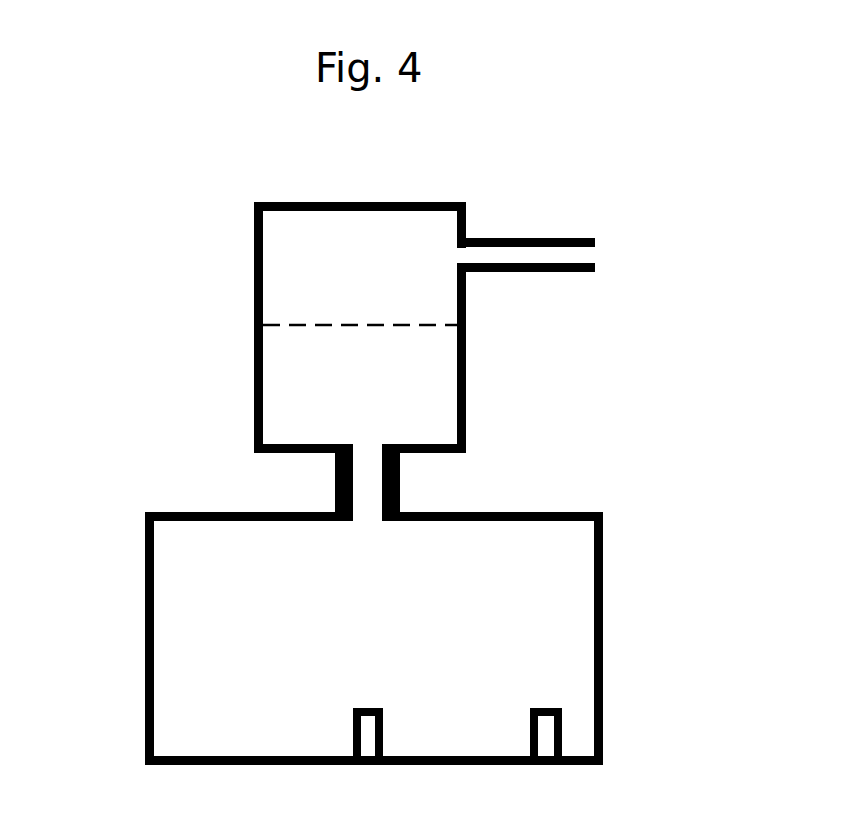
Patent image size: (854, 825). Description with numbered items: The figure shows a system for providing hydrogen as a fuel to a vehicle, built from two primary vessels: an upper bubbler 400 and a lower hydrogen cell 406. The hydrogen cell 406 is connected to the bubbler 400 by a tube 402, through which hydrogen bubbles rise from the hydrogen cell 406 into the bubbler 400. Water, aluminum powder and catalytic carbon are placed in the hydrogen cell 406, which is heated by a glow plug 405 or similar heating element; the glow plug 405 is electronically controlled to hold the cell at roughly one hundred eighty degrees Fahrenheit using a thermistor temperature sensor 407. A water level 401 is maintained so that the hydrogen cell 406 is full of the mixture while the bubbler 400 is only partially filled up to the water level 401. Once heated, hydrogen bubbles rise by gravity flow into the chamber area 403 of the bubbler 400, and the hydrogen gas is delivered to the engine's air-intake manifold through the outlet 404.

The bubbler 400 is at (254, 268).
The water level 401 is at (330, 326).
The tube 402 is at (365, 482).
The chamber area 403 is at (357, 263).
The outlet 404 is at (498, 255).
The glow plug 405 is at (383, 712).
The hydrogen cell 406 is at (603, 702).
The thermistor temperature sensor 407 is at (562, 732).